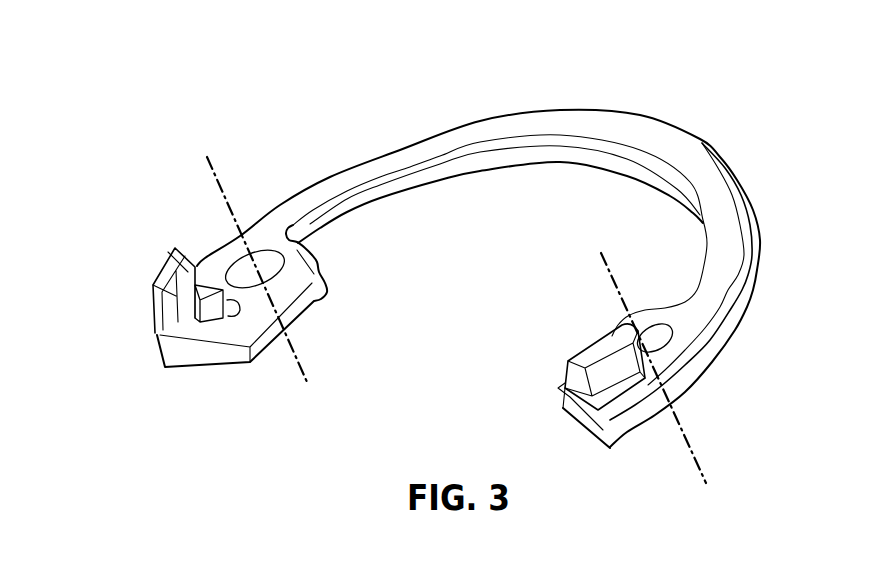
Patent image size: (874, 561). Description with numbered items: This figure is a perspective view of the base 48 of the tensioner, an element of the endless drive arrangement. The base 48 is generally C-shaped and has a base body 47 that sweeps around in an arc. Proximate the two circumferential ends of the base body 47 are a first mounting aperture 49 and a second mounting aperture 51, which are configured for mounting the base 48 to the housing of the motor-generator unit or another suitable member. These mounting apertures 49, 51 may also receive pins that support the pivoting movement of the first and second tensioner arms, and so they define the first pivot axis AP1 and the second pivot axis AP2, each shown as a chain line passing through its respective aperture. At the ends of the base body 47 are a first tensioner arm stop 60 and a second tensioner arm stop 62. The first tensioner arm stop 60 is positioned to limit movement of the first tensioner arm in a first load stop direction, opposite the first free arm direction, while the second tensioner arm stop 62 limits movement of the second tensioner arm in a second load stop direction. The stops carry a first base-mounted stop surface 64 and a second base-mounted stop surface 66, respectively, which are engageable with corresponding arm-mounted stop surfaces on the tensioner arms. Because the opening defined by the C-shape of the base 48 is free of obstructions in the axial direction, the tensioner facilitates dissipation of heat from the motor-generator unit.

The base body 47 is at (588, 135).
The base 48 is at (338, 105).
The first mounting aperture 49 is at (245, 280).
The second mounting aperture 51 is at (660, 338).
The first tensioner arm stop 60 is at (165, 272).
The second tensioner arm stop 62 is at (597, 352).
The first base-mounted stop surface 64 is at (185, 282).
The second base-mounted stop surface 66 is at (572, 357).
The first pivot axis AP1 is at (207, 157).
The second pivot axis AP2 is at (614, 283).